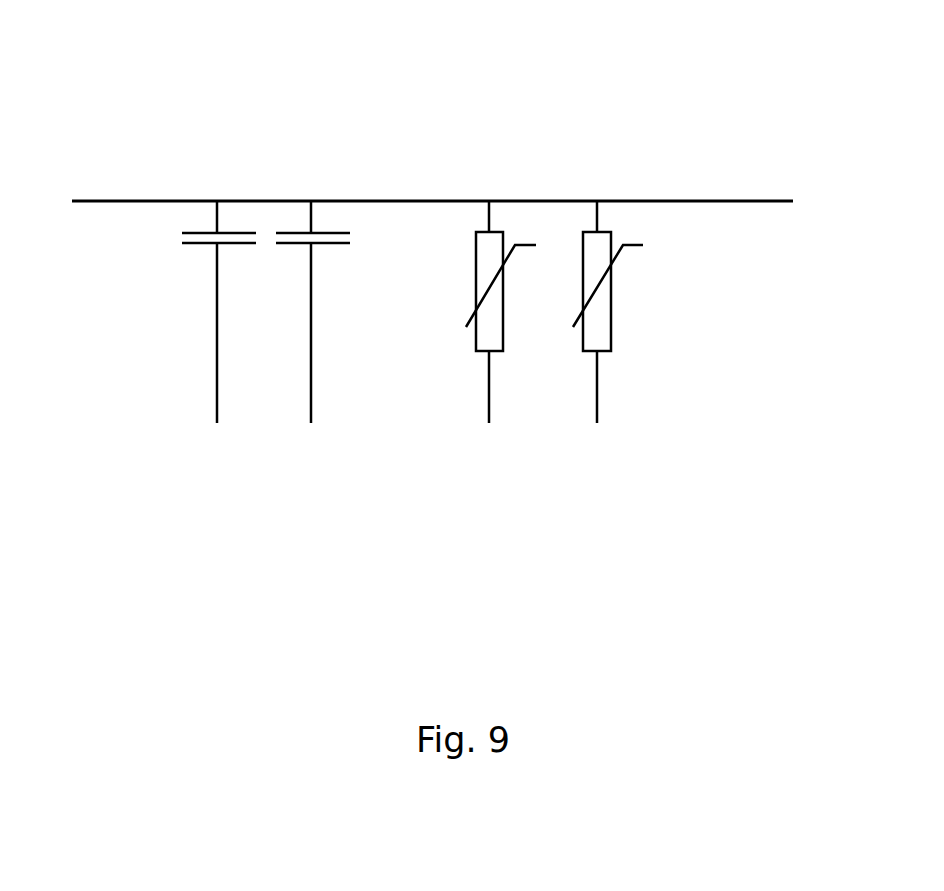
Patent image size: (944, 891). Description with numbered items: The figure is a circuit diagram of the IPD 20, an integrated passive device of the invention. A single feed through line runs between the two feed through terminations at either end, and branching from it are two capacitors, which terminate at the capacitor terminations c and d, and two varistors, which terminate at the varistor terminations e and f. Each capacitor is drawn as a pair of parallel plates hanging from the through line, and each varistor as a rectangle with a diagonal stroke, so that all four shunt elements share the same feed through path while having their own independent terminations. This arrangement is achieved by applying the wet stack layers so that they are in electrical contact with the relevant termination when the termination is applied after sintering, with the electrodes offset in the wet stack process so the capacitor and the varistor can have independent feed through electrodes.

The IPD 20 is at (266, 99).
The capacitor termination c is at (219, 340).
The capacitor termination d is at (313, 340).
The varistor termination e is at (501, 340).
The varistor termination f is at (608, 340).